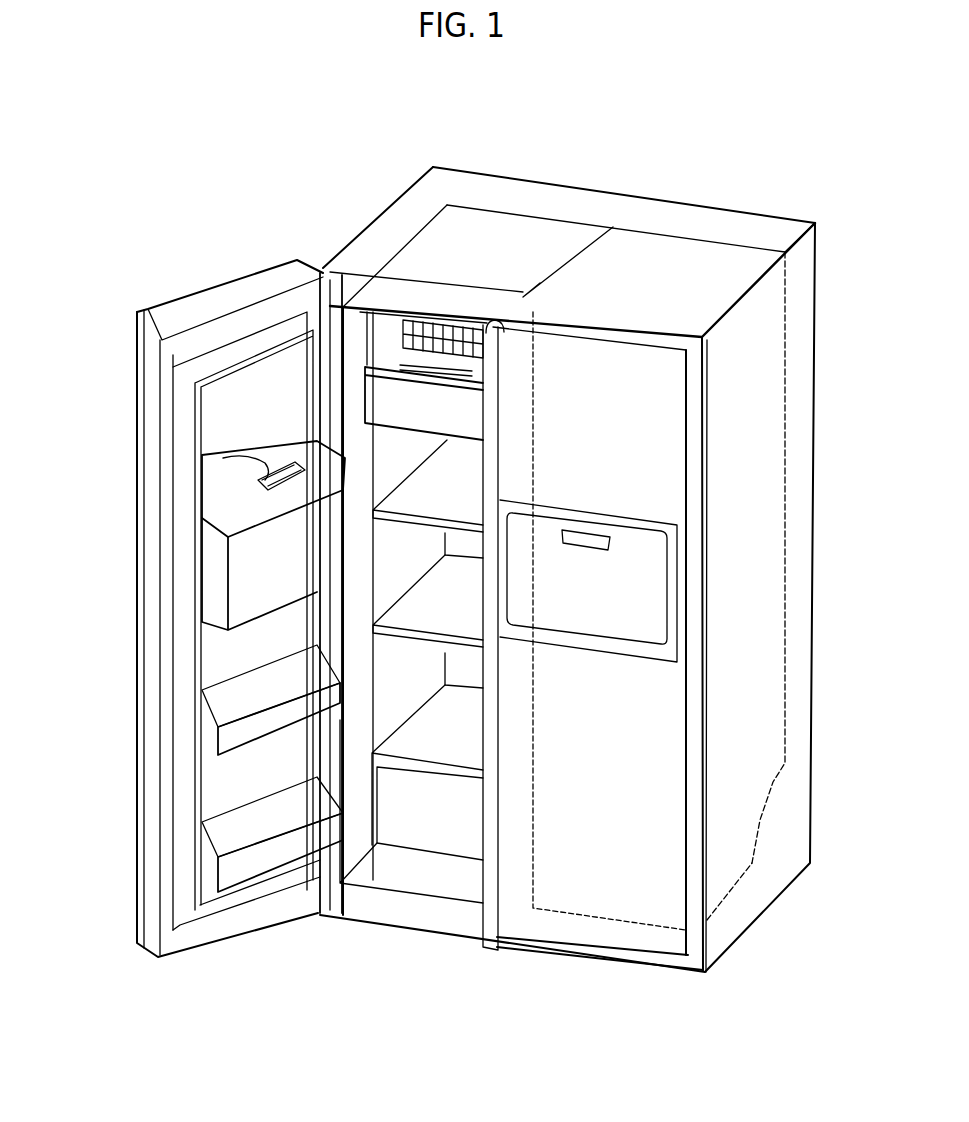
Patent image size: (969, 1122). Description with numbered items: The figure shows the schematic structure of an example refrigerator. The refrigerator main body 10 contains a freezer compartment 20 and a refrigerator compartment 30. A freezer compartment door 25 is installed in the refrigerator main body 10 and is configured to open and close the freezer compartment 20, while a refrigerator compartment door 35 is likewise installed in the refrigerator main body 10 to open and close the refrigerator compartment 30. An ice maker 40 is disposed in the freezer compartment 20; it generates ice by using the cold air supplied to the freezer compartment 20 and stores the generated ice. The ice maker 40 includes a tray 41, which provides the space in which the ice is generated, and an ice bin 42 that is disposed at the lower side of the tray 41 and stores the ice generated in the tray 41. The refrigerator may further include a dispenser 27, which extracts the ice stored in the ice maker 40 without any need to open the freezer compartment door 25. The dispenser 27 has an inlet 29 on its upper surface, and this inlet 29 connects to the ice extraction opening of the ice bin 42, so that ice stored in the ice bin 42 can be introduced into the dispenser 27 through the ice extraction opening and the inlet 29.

The refrigerator main body 10 is at (578, 172).
The freezer compartment 20 is at (399, 446).
The freezer compartment door 25 is at (133, 695).
The dispenser 27 is at (245, 578).
The inlet 29 is at (335, 460).
The refrigerator compartment 30 is at (733, 643).
The refrigerator compartment door 35 is at (587, 928).
The ice maker 40 is at (463, 93).
The tray 41 is at (455, 330).
The ice bin 42 is at (442, 395).